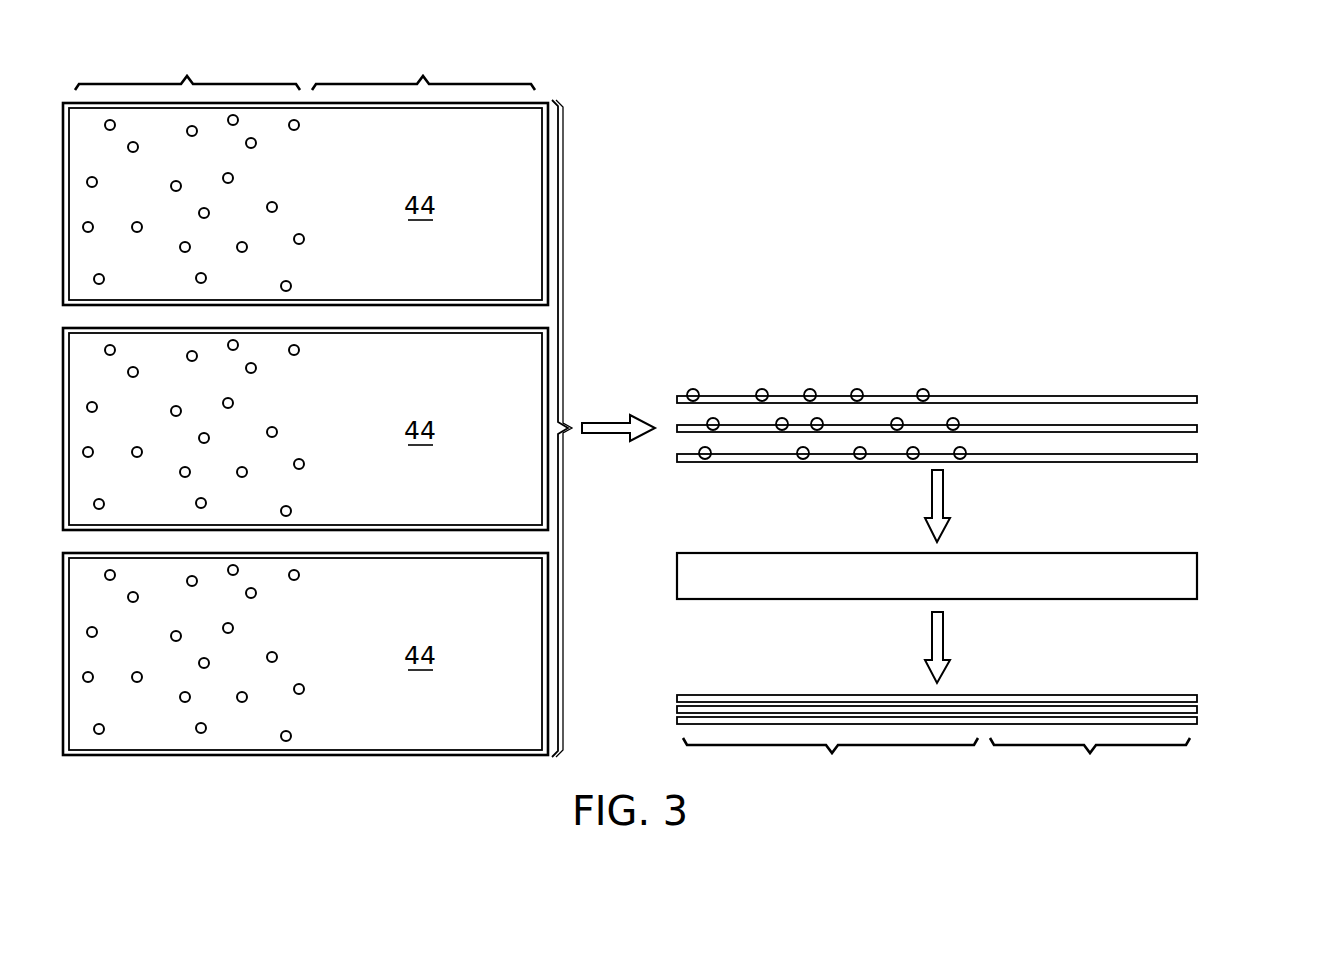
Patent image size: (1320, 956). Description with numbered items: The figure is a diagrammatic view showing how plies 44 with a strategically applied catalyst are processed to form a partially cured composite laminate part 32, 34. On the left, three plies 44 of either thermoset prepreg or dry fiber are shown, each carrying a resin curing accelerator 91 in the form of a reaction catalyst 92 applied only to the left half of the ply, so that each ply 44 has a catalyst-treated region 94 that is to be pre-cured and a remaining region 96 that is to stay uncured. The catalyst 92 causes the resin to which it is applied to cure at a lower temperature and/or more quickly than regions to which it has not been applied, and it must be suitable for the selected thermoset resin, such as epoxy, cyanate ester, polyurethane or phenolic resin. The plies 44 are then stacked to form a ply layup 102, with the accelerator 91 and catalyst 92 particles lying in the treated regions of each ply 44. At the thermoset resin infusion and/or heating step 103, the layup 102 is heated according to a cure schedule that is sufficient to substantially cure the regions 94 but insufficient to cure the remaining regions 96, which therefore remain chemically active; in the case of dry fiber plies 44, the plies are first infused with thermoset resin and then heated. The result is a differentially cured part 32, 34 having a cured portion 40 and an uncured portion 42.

The partially cured part 32 is at (926, 669).
The partially cured part 34 is at (937, 709).
The cured portion 40 is at (830, 762).
The uncured portion 42 is at (1090, 762).
The ply 44 is at (669, 399).
The resin curing accelerator 91 is at (140, 210).
The reaction catalyst 92 is at (180, 182).
The region to be pre-cured 94 is at (187, 65).
The remaining region 96 is at (423, 65).
The ply layup 102 is at (1158, 328).
The heating step 103 is at (1198, 577).